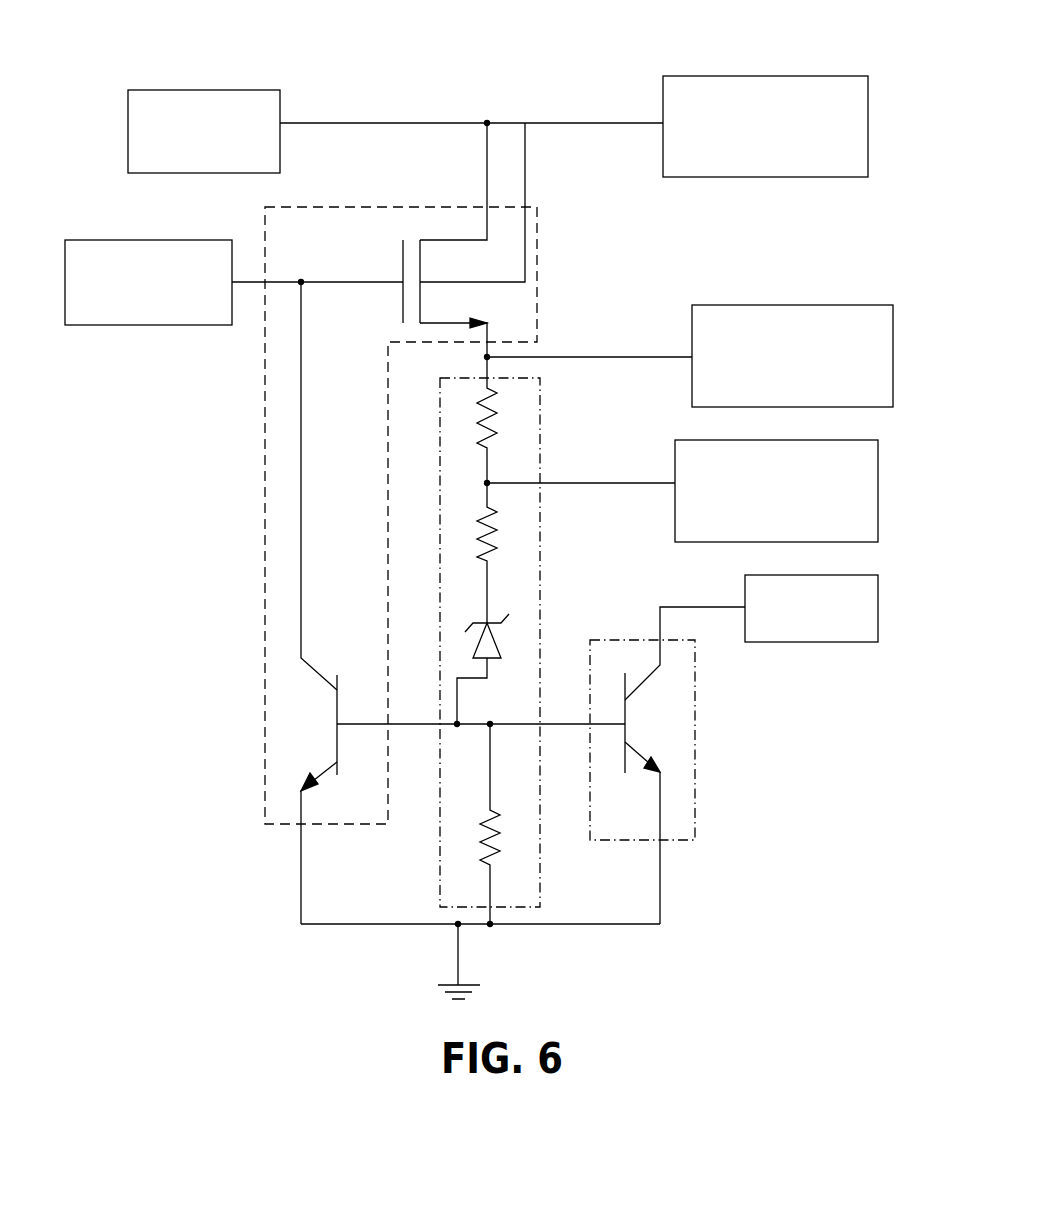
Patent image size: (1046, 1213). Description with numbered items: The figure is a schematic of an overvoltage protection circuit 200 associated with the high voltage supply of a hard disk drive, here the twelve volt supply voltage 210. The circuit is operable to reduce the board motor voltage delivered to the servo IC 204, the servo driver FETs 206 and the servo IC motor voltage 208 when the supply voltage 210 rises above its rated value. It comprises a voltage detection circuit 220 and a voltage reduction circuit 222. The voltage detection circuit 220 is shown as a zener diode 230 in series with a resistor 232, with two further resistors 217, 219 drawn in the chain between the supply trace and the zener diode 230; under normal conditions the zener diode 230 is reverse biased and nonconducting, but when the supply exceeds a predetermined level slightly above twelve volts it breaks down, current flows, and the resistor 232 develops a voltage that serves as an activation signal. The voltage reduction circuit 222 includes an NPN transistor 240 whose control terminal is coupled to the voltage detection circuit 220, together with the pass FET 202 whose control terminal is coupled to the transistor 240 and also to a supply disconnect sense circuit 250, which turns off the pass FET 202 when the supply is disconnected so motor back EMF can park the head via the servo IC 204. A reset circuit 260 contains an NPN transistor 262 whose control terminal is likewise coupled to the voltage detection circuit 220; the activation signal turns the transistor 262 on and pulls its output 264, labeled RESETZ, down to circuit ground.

The overvoltage protection circuit 200 is at (605, 53).
The pass FET 202 is at (434, 240).
The servo IC 204 is at (810, 76).
The servo driver FETs 206 is at (828, 305).
The servo IC motor voltage 208 is at (878, 483).
The 12V supply voltage 210 is at (232, 90).
The resistor 217 is at (497, 415).
The resistor 219 is at (497, 531).
The voltage detection circuit 220 is at (540, 597).
The voltage reduction circuit 222 is at (538, 284).
The zener diode 230 is at (505, 647).
The resistor 232 is at (490, 865).
The transistor 240 is at (318, 760).
The supply disconnect sense circuit 250 is at (129, 240).
The reset circuit 260 is at (695, 822).
The transistor 262 is at (645, 680).
The output 264 is at (812, 642).